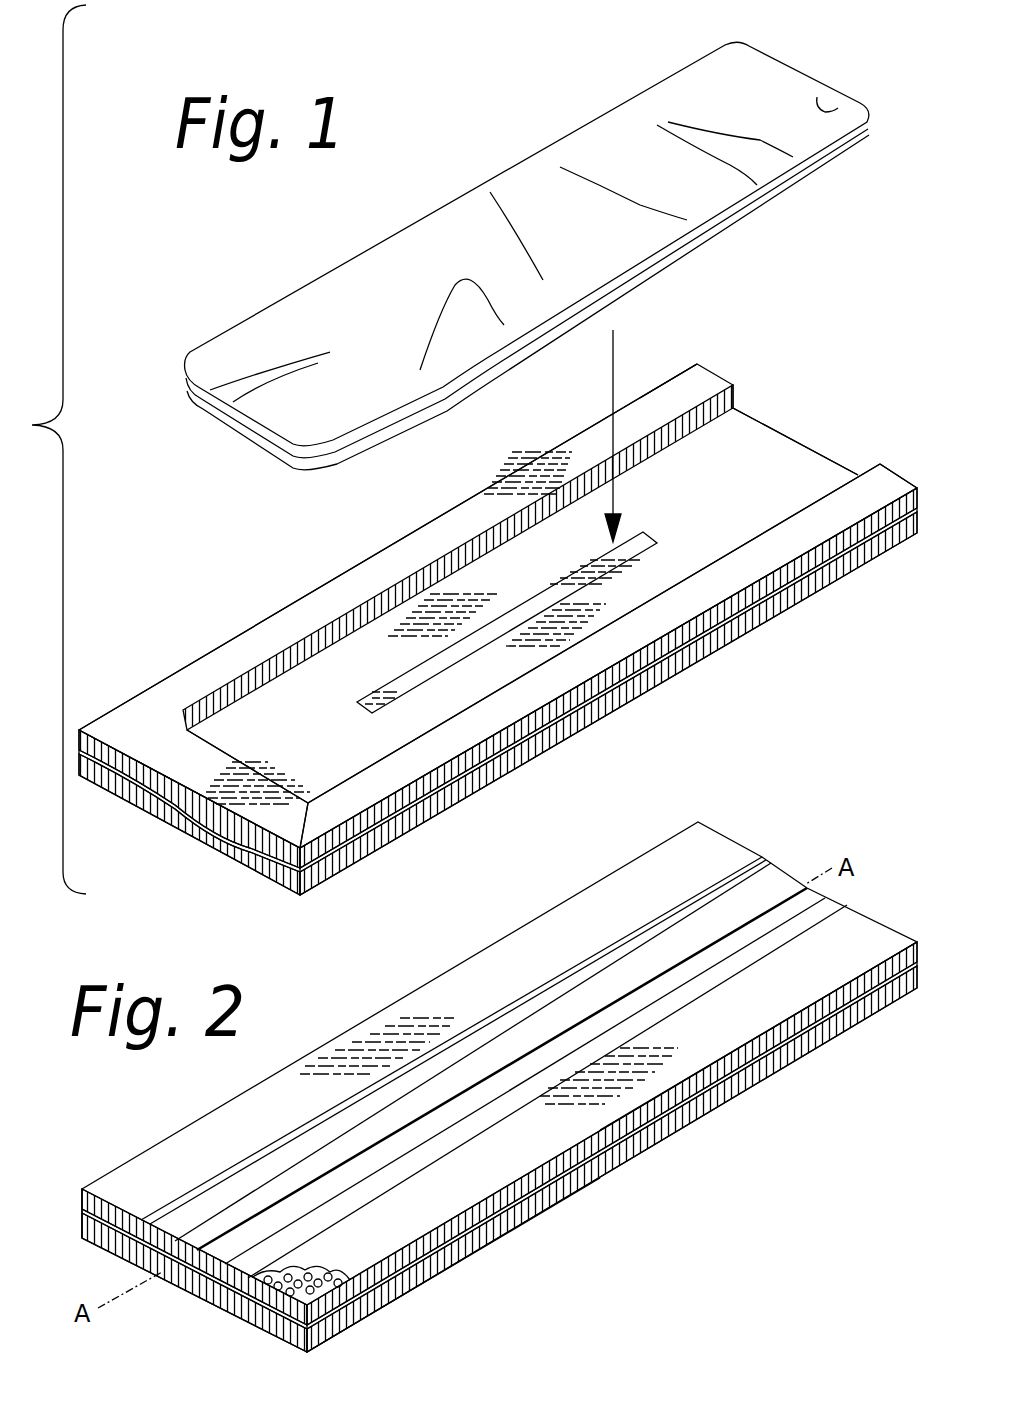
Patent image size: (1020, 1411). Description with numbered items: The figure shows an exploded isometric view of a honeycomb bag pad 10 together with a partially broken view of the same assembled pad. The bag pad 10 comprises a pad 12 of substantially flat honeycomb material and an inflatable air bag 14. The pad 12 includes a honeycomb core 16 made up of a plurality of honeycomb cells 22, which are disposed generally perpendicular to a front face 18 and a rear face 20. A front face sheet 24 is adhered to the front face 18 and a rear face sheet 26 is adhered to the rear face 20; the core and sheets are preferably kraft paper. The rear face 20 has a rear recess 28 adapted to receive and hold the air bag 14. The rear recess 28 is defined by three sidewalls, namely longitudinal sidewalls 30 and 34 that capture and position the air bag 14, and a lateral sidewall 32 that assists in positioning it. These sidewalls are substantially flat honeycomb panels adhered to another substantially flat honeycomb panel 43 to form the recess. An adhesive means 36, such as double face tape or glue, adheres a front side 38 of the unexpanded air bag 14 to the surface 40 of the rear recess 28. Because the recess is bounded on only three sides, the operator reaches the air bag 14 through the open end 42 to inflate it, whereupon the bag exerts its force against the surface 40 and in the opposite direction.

In FIG. 1, the honeycomb bag pad 10 is at (170, 276).
In FIG. 1, the pad 12 is at (386, 860).
In FIG. 2, the pad 12 is at (303, 1028).
In FIG. 1, the air bag 14 is at (427, 318).
In FIG. 1, the honeycomb core 16 is at (858, 545).
In FIG. 2, the honeycomb core 16 is at (900, 975).
In FIG. 1, the front face 18 is at (546, 762).
In FIG. 2, the front face 18 is at (718, 840).
In FIG. 1, the rear face 20 is at (762, 430).
In FIG. 2, the rear face 20 is at (603, 1179).
In FIG. 2, the honeycomb cells 22 is at (283, 1290).
In FIG. 1, the front face sheet 24 is at (680, 678).
In FIG. 2, the front face sheet 24 is at (862, 905).
In FIG. 1, the rear face sheet 26 is at (708, 373).
In FIG. 2, the rear face sheet 26 is at (410, 1275).
In FIG. 1, the rear recess 28 is at (274, 752).
In FIG. 1, the longitudinal sidewall 30 is at (307, 648).
In FIG. 1, the lateral sidewall 32 is at (184, 778).
In FIG. 1, the longitudinal sidewall 34 is at (359, 818).
In FIG. 1, the adhesive means 36 is at (590, 578).
In FIG. 1, the front side 38 is at (687, 253).
In FIG. 1, the surface 40 is at (769, 520).
In FIG. 1, the end 42 is at (835, 468).
In FIG. 2, the honeycomb panel 43 is at (72, 1224).